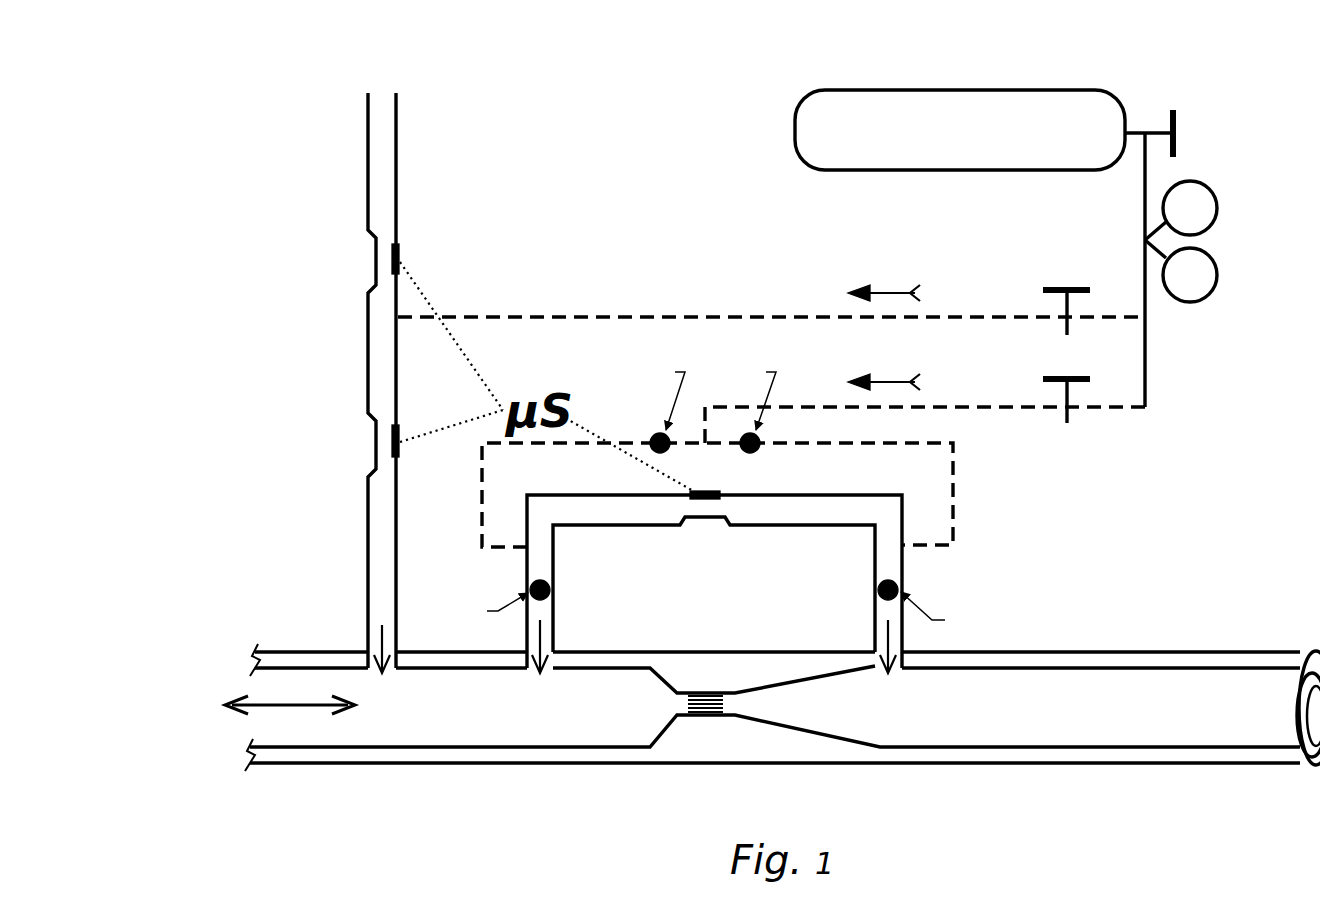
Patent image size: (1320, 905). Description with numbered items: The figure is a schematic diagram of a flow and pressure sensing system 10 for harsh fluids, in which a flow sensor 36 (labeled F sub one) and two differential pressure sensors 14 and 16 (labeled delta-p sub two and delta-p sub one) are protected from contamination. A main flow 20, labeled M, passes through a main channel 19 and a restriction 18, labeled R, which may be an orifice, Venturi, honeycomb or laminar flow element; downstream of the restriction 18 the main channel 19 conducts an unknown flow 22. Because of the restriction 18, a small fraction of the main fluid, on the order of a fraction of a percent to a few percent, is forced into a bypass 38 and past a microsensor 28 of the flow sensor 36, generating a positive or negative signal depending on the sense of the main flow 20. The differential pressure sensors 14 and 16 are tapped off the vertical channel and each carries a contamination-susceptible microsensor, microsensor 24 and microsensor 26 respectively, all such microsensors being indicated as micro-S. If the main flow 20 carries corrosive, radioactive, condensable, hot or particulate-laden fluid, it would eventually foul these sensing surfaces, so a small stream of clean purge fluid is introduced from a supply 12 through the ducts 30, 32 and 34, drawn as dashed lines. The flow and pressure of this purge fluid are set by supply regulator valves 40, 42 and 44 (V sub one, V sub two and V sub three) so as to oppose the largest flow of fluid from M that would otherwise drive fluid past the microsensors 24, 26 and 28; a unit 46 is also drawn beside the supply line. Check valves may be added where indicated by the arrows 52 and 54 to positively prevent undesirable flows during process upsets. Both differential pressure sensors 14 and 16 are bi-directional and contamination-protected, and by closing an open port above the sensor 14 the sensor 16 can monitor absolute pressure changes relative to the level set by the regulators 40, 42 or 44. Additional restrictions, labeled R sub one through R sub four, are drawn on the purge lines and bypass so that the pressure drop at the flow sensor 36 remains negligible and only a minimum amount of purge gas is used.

The flow measurement system 10 is at (622, 108).
The supply 12 is at (958, 90).
The differential pressure sensor 14 is at (316, 288).
The differential pressure sensor 16 is at (316, 471).
The restriction 18 is at (712, 716).
The main channel 19 is at (480, 752).
The main flow 20 is at (305, 706).
The unknown flow 22 is at (1222, 705).
The microsensor 24 is at (400, 254).
The microsensor 26 is at (400, 432).
The microsensor 28 is at (718, 491).
The duct 30 is at (1000, 406).
The duct 32 is at (1000, 314).
The duct 34 is at (958, 492).
The flow sensor 36 is at (707, 582).
The bypass 38 is at (853, 493).
The supply regulator valve 40 is at (1216, 108).
The supply regulator valve 42 is at (1102, 240).
The supply regulator valve 44 is at (1116, 470).
The pump 46 is at (1217, 208).
The arrow 52 is at (886, 291).
The arrow 54 is at (886, 380).